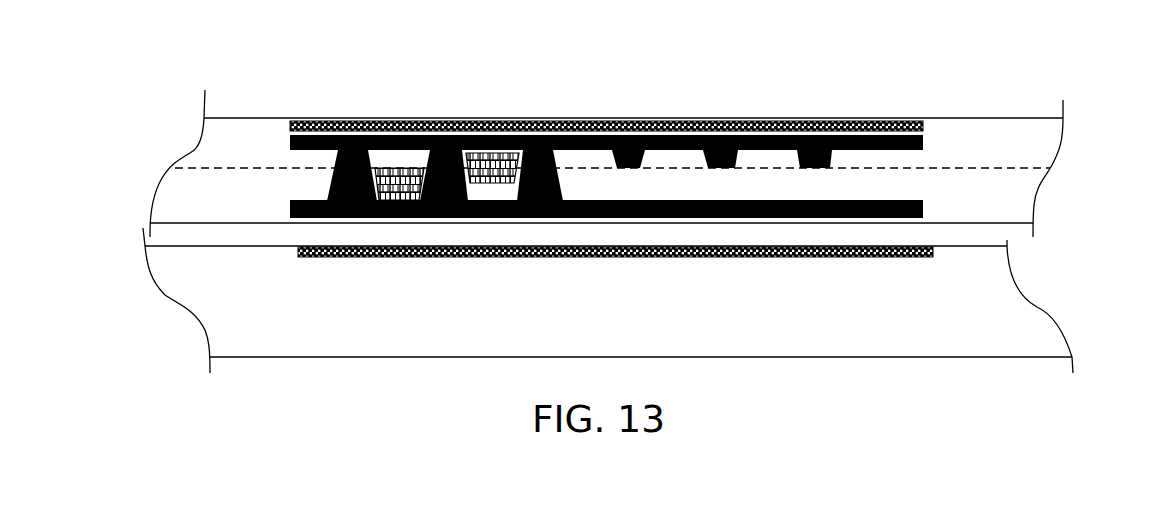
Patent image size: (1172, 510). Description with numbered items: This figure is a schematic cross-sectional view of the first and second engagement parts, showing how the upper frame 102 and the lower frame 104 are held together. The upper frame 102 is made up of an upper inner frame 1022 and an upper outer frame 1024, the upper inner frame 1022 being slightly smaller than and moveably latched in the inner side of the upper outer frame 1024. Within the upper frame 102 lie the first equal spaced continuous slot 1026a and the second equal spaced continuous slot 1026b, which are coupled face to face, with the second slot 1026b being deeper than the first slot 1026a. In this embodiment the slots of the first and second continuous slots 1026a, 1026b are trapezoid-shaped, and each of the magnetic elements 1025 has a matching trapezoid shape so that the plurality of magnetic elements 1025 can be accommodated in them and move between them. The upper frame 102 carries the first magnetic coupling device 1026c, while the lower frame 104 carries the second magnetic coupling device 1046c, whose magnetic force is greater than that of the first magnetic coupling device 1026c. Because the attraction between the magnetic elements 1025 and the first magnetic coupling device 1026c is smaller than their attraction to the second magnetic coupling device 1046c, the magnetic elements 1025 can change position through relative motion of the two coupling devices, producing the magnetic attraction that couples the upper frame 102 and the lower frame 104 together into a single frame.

The upper frame 102 is at (143, 112).
The lower frame 104 is at (1072, 245).
The upper inner frame 1022 is at (1072, 112).
The upper outer frame 1024 is at (1057, 168).
The magnetic elements 1025 is at (497, 170).
The first equal spaced continuous slot 1026a is at (923, 144).
The second equal spaced continuous slot 1026b is at (290, 209).
The first magnetic coupling device 1026c is at (348, 122).
The second magnetic coupling device 1046c is at (697, 257).